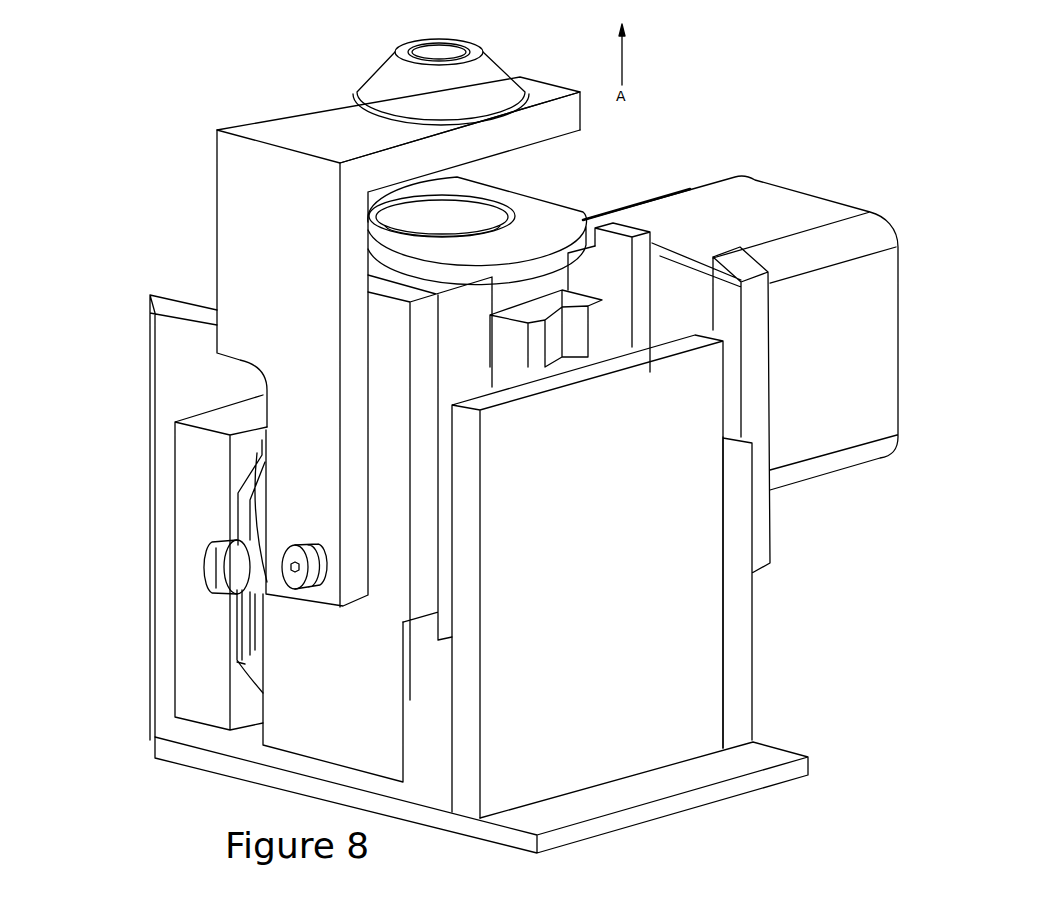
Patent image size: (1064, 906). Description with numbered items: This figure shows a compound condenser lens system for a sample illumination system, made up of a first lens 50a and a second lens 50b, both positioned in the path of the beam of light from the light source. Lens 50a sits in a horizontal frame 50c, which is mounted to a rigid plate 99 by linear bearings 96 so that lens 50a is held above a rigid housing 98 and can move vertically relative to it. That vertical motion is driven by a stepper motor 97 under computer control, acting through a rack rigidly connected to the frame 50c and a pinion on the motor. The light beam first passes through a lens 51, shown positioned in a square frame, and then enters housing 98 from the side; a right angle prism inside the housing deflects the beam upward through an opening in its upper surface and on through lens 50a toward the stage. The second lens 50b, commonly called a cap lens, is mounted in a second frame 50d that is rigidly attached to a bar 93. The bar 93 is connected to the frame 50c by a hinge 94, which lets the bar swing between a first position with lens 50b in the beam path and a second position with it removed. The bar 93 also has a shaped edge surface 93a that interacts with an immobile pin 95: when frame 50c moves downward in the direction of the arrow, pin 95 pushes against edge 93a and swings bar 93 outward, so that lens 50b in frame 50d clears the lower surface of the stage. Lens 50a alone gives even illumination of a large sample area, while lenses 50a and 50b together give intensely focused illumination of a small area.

The first lens 50a is at (538, 200).
The second lens 50b is at (480, 40).
The horizontal frame 50c is at (617, 270).
The second frame 50d is at (347, 96).
The lens 51 is at (245, 662).
The bar 93 is at (250, 234).
The shaped edge surface 93a is at (257, 521).
The hinge 94 is at (290, 582).
The immobile pin 95 is at (207, 568).
The linear bearings 96 is at (600, 335).
The stepper motor 97 is at (877, 320).
The rigid housing 98 is at (320, 744).
The rigid plate 99 is at (683, 663).